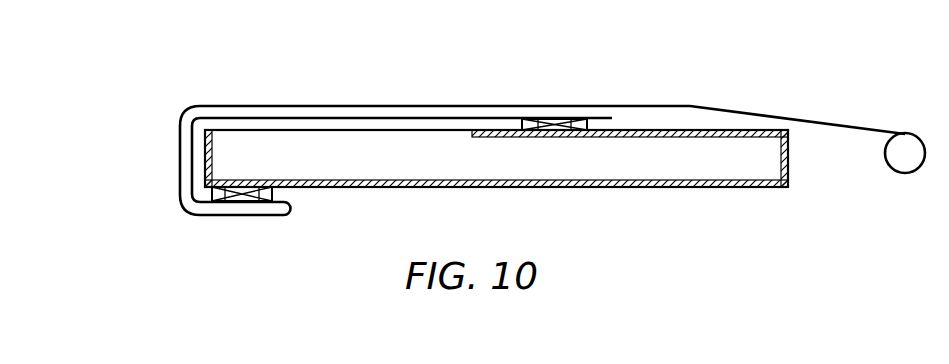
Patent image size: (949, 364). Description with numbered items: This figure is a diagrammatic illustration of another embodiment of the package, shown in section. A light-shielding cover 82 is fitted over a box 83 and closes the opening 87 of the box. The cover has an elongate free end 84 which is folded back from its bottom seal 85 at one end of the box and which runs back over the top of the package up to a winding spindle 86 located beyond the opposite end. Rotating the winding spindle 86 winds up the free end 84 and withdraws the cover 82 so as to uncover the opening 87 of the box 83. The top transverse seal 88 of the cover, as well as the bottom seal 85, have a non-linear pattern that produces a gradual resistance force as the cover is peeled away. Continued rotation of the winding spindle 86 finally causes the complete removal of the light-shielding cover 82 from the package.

The light-shielding cover 82 is at (251, 118).
The box 83 is at (732, 183).
The elongate free end 84 is at (177, 160).
The bottom seal 85 is at (246, 195).
The winding spindle 86 is at (907, 145).
The opening 87 is at (338, 132).
The top transverse seal 88 is at (553, 120).